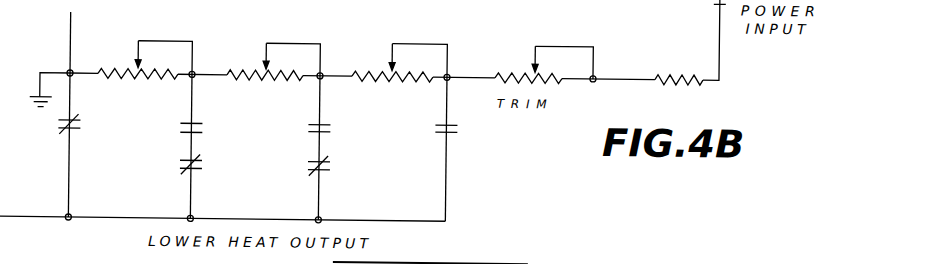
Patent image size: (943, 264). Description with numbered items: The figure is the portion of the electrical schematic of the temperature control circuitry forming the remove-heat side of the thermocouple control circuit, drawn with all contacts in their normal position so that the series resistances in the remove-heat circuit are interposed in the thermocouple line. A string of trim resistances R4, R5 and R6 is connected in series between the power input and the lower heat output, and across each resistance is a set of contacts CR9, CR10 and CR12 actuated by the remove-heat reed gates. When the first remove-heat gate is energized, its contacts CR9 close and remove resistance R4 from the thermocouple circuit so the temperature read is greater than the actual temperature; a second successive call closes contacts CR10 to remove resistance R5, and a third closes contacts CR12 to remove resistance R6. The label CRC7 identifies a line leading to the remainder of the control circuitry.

The resistance R4 is at (120, 48).
The resistance R5 is at (250, 46).
The resistance R6 is at (378, 47).
The contacts CR9 is at (155, 126).
The contacts CR10 is at (284, 155).
The contacts CR12 is at (416, 154).
The circuit CRC7 is at (517, 253).